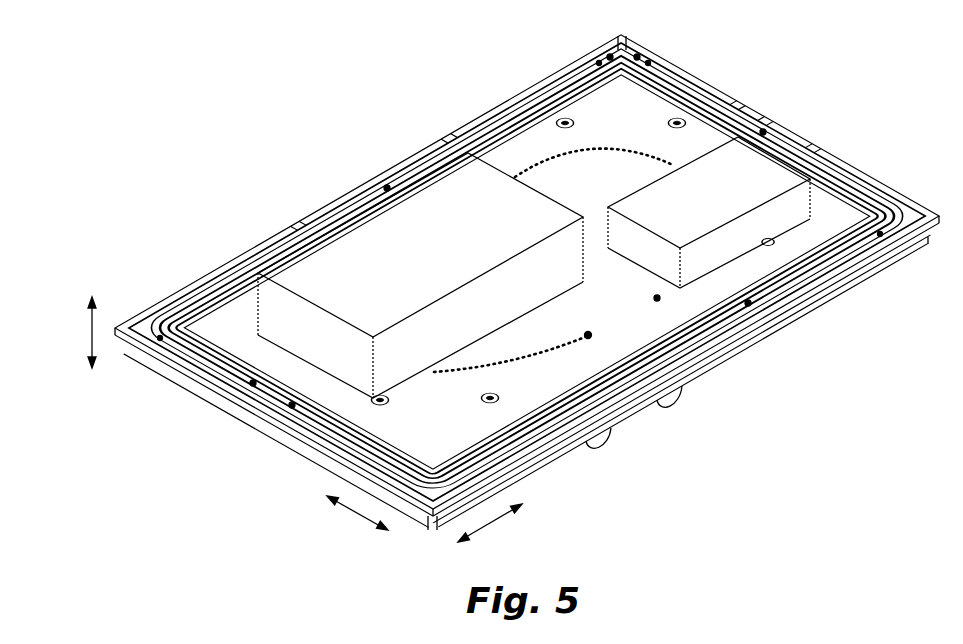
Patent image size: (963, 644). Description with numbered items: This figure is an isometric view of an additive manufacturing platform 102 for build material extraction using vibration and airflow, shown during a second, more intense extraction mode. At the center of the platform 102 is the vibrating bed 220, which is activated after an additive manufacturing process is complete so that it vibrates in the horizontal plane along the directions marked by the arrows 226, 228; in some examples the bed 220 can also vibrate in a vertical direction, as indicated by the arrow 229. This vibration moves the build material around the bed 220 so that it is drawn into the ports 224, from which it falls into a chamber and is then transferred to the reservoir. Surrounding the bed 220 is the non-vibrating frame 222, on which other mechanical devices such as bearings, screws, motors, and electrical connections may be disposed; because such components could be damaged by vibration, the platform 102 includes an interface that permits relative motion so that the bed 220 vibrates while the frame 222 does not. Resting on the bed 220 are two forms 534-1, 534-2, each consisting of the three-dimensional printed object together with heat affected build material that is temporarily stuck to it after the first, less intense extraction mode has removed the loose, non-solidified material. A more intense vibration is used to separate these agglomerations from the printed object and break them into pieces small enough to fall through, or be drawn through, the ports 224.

The additive manufacturing platform 102 is at (312, 66).
The vibrating bed 220 is at (615, 342).
The non-vibrating frame 222 is at (758, 125).
The ports 224 is at (535, 163).
The arrow 226 is at (357, 516).
The arrow 228 is at (490, 523).
The arrow 229 is at (88, 336).
The form 534-1 is at (380, 220).
The form 534-2 is at (765, 170).